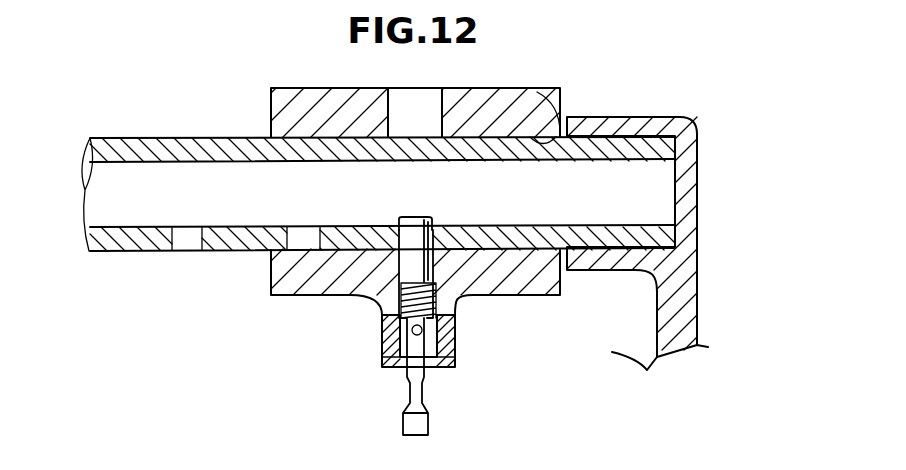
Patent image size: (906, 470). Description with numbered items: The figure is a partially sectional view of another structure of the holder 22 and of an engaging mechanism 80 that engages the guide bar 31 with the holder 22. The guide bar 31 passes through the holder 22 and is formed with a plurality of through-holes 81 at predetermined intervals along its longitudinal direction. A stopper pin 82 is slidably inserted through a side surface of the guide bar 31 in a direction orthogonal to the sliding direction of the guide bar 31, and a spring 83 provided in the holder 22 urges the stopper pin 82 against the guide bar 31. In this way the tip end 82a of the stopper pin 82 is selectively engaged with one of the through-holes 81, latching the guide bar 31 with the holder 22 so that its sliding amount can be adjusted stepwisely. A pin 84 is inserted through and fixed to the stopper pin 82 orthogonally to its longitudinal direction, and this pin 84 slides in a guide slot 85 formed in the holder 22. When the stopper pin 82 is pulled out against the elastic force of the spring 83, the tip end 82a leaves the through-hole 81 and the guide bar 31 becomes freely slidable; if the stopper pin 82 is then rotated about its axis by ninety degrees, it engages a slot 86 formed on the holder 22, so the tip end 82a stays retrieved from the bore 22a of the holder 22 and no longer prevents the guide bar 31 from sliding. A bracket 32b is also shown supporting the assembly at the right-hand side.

The holder 22 is at (493, 87).
The bore 22a is at (548, 137).
The guide bar 31 is at (181, 138).
The bracket 32b is at (700, 290).
The engaging mechanism 80 is at (250, 384).
The through-holes 81 is at (300, 243).
The stopper pin 82 is at (433, 422).
The tip end 82a is at (413, 216).
The spring 83 is at (400, 315).
The pin 84 is at (423, 325).
The guide slot 85 is at (400, 355).
The slot 86 is at (447, 375).